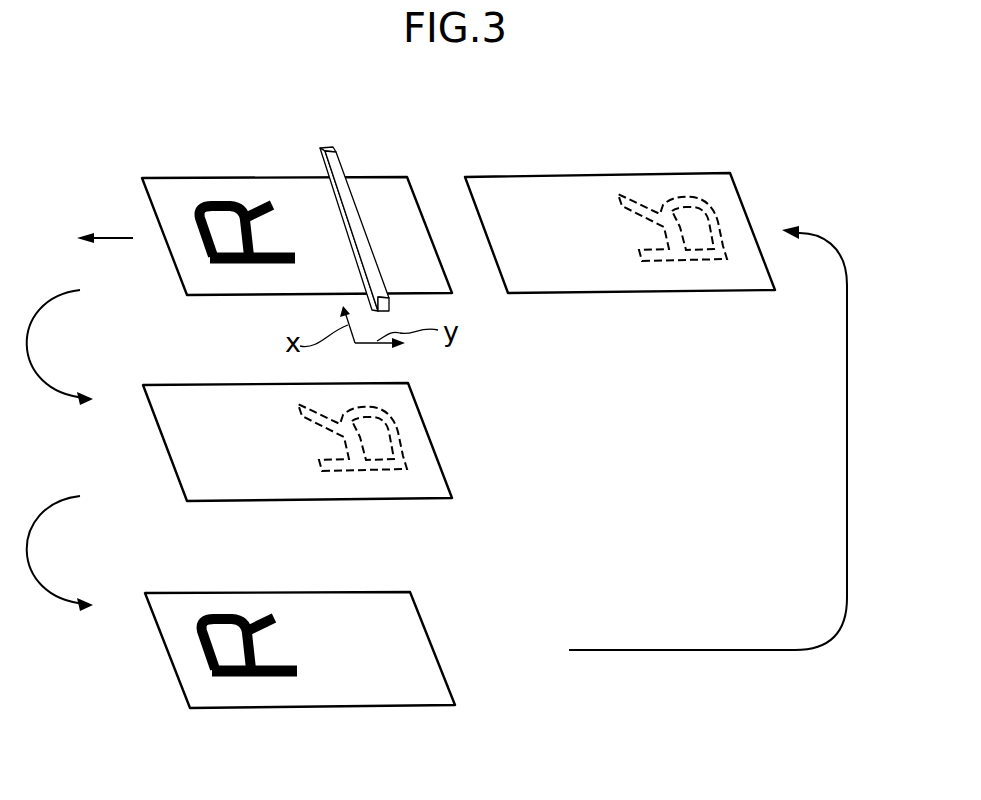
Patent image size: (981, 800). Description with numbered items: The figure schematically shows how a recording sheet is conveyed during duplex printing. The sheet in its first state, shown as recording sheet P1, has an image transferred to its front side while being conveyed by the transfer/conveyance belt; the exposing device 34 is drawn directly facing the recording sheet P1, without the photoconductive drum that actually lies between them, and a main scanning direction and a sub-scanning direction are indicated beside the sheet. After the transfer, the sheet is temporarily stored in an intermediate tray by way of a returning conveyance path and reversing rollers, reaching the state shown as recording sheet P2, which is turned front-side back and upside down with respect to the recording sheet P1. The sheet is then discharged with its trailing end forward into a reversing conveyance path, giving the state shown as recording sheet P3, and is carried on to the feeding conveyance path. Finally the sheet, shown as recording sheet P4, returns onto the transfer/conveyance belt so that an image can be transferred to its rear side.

The exposing device 34 is at (323, 149).
The recording sheet in first state P1 is at (200, 177).
The recording sheet in second state P2 is at (428, 432).
The recording sheet in third state P3 is at (437, 643).
The sheet in fourth state (second side image) P4 is at (677, 174).